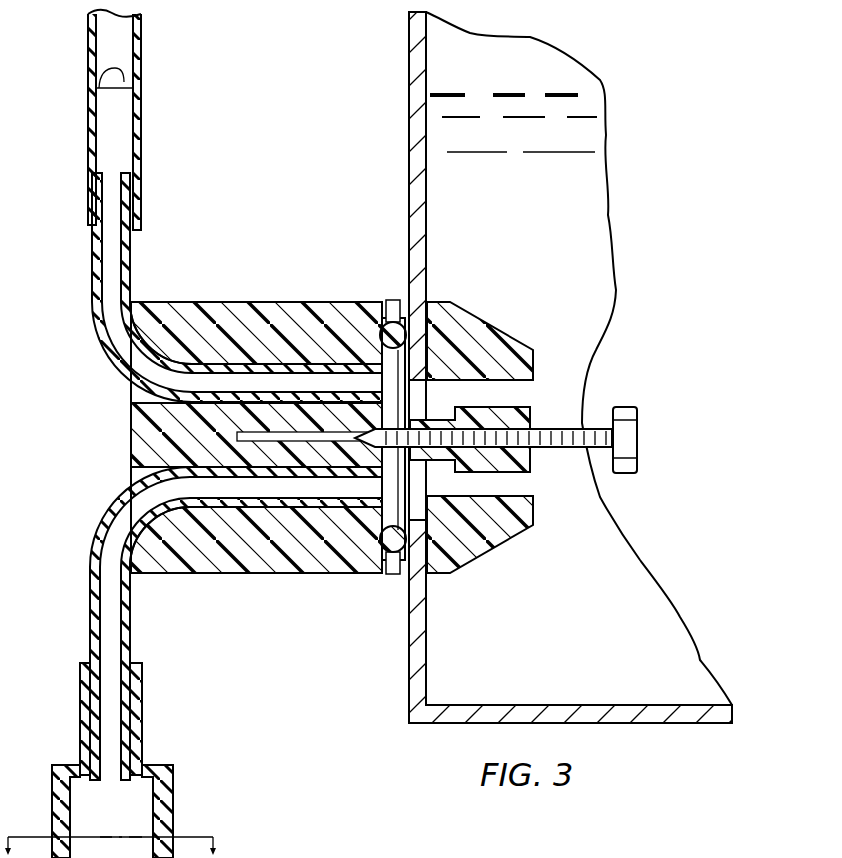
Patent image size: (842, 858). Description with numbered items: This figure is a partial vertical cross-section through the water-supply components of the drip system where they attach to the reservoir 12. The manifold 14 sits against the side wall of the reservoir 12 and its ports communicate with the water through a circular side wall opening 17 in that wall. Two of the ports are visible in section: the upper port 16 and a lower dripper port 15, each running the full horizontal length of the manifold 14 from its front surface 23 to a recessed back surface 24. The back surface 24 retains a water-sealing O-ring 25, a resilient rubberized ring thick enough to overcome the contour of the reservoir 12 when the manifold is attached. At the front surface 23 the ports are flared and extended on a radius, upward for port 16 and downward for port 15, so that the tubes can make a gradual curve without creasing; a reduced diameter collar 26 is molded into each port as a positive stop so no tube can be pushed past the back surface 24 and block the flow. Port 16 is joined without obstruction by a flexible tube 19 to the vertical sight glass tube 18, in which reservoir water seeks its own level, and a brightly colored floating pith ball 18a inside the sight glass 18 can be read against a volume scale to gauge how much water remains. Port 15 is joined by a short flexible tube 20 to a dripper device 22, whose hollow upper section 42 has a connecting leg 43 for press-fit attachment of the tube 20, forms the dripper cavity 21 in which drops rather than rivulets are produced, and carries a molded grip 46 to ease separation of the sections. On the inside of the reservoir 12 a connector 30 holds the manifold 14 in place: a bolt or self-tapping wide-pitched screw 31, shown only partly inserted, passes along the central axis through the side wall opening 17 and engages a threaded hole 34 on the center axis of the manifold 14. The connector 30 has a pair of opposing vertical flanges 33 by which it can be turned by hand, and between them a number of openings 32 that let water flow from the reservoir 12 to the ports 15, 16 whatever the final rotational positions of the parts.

The reservoir 12 is at (605, 239).
The manifold 14 is at (226, 447).
The dripper port 15 is at (209, 622).
The port 16 is at (212, 287).
The side wall opening 17 is at (440, 360).
The sight glass tube 18 is at (124, 120).
The floating pith ball 18a is at (120, 77).
The tube 19 is at (97, 270).
The tube 20 is at (90, 603).
The dripper cavity 21 is at (136, 812).
The dripper device 22 is at (129, 786).
The front surface 23 is at (130, 428).
The back surface 24 is at (380, 366).
The O-ring 25 is at (390, 312).
The collar 26 is at (258, 338).
The connector 30 is at (504, 433).
The screw 31 is at (638, 435).
The opening 32 is at (525, 393).
The vertical flange 33 is at (488, 326).
The threaded hole 34 is at (313, 478).
The upper section 42 is at (52, 790).
The connecting leg 43 is at (80, 695).
The grip 46 is at (173, 822).